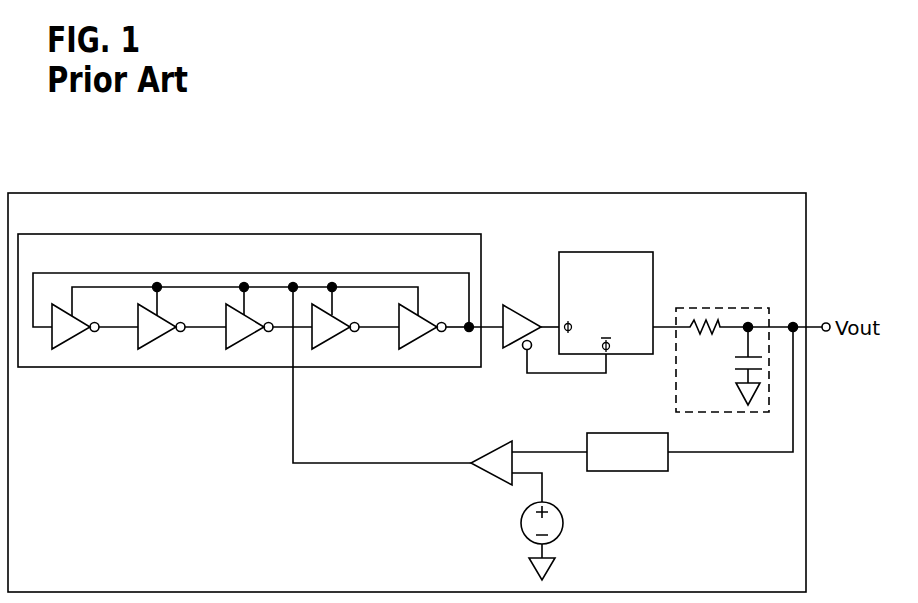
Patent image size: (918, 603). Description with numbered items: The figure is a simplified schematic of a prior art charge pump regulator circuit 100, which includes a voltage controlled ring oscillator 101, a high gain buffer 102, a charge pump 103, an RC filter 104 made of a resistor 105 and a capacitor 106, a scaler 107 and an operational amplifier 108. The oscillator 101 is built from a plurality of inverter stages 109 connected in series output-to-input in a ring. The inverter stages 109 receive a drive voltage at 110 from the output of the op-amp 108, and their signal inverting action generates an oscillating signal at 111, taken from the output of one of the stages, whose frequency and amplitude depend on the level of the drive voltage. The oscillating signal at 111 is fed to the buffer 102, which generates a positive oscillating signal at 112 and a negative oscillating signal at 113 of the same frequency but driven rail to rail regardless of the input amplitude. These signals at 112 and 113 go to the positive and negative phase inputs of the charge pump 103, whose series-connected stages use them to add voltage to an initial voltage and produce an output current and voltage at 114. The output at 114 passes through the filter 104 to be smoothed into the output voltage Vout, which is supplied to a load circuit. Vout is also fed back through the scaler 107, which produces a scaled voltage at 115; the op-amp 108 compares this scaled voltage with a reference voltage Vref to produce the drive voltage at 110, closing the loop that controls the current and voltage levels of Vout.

The charge pump regulator circuit 100 is at (328, 194).
The voltage controlled ring oscillator 101 is at (119, 236).
The high gain buffer 102 is at (493, 316).
The charge pump 103 is at (633, 252).
The RC filter 104 is at (748, 309).
The resistor 105 is at (700, 320).
The capacitor 106 is at (757, 372).
The scaler 107 is at (655, 471).
The operational amplifier 108 is at (488, 477).
The inverter stages 109 is at (225, 340).
The drive voltage 110 is at (330, 463).
The oscillating signal 111 is at (492, 328).
The positive oscillating signal 112 is at (553, 328).
The negative oscillating signal 113 is at (563, 373).
The charge pump output 114 is at (665, 328).
The scaled voltage 115 is at (565, 452).